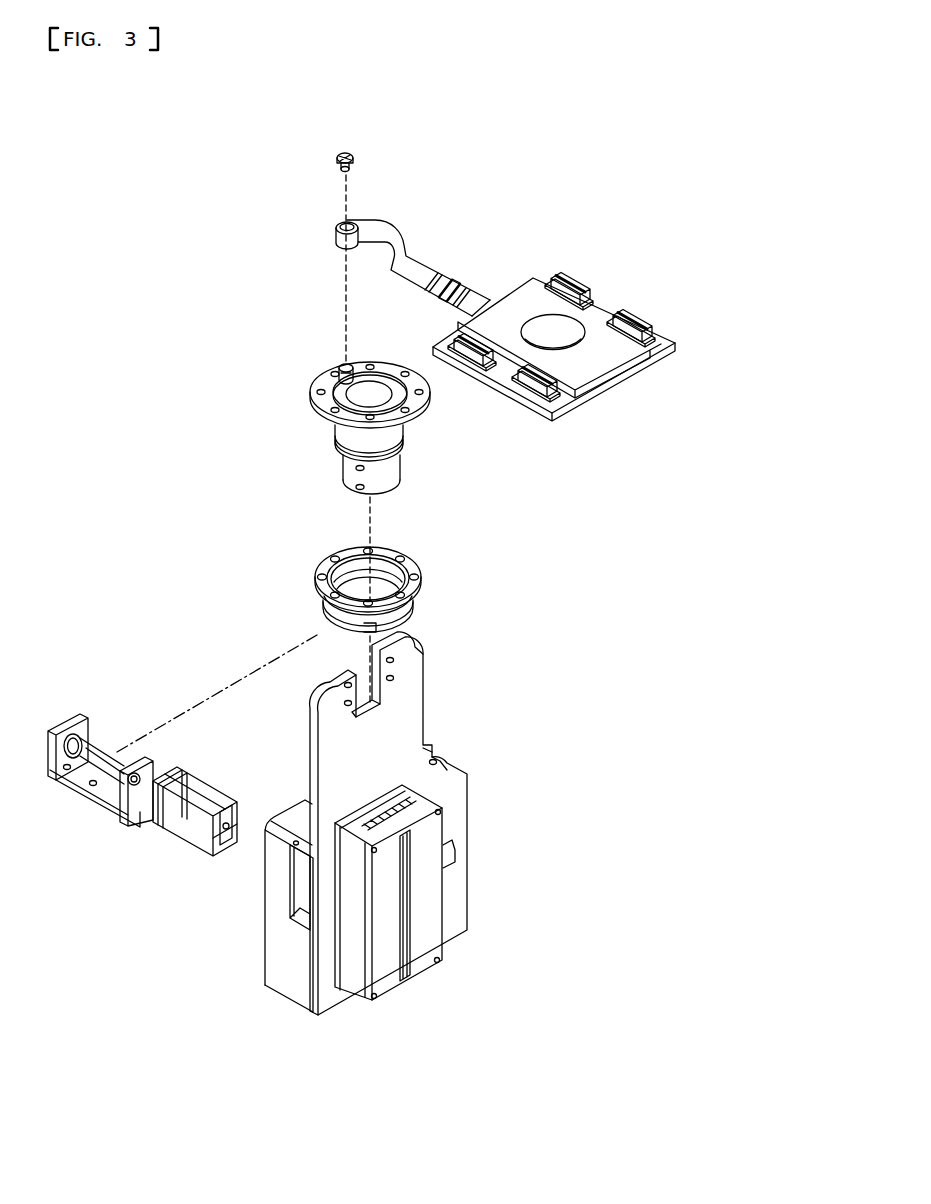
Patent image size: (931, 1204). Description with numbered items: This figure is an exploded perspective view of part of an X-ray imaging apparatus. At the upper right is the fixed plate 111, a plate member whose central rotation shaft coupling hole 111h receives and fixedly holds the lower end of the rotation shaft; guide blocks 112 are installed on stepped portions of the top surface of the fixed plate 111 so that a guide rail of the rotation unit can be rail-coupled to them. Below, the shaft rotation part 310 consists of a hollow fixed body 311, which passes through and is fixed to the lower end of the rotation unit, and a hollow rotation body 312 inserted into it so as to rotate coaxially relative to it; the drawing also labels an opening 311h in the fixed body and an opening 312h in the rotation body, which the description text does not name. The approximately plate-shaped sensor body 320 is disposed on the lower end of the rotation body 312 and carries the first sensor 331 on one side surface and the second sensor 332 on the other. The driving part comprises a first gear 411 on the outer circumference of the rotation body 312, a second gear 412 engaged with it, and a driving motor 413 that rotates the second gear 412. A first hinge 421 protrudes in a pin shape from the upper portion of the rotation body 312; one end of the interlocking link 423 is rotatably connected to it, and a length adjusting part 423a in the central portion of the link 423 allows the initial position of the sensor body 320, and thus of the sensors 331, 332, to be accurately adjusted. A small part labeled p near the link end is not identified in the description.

The pin p is at (337, 158).
The interlocking link 423 is at (380, 221).
The length adjusting part 423a is at (458, 284).
The fixed plate 111 is at (628, 372).
The rotation shaft coupling hole 111h is at (550, 338).
The guide block 112 is at (568, 278).
The first gear 411 is at (313, 425).
The flange hole 312h is at (371, 395).
The first hinge 421 is at (322, 371).
The hollow rotation body 312 is at (405, 450).
The shaft rotation part 310 is at (537, 483).
The hollow fixed body 311 is at (425, 578).
The ring hole 311h is at (357, 557).
The sensor body 320 is at (393, 730).
The second sensor 332 is at (287, 938).
The first sensor 331 is at (423, 943).
The second gear 412 is at (95, 750).
The driving motor 413 is at (177, 822).